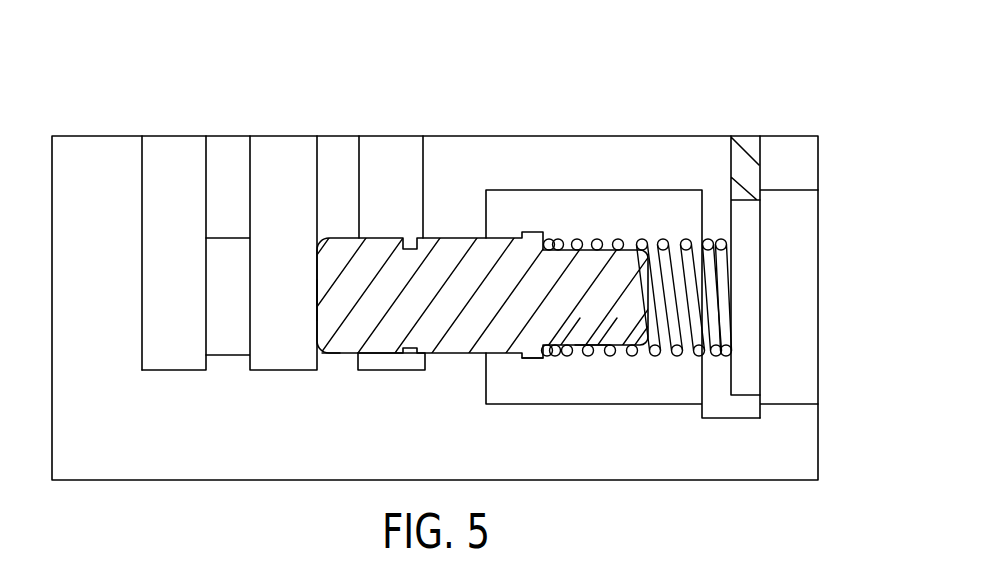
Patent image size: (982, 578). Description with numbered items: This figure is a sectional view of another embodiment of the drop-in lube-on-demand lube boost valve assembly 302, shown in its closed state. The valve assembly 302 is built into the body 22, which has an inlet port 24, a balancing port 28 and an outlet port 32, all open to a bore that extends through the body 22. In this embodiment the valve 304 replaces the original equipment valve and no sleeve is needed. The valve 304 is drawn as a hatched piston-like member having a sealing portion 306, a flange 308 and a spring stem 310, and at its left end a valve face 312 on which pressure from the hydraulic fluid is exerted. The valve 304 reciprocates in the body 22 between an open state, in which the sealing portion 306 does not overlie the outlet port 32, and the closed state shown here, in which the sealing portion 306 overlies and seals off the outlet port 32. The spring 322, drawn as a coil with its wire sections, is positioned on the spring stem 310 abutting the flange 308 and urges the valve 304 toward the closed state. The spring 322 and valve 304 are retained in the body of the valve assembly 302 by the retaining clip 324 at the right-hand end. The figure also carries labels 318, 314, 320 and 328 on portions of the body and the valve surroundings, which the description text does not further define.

The body 22 is at (90, 146).
The balancing port 28 is at (173, 146).
The inlet port 24 is at (282, 147).
The bore wall 318 is at (331, 238).
The outlet port 32 is at (408, 150).
The lube boost valve assembly 302 is at (638, 123).
The valve 304 is at (456, 236).
The valve face 312 is at (320, 299).
The sealing portion 306 is at (331, 356).
The groove 314 is at (408, 355).
The flange 308 is at (533, 360).
The spring stem 310 is at (593, 335).
The spring housing 320 is at (563, 202).
The spring 322 is at (658, 360).
The retaining clip 324 is at (752, 160).
The end cap 328 is at (762, 315).